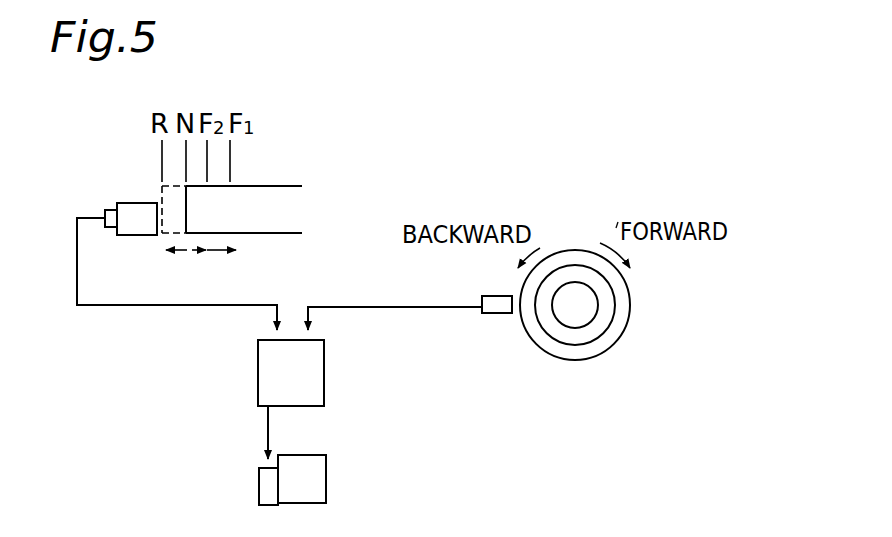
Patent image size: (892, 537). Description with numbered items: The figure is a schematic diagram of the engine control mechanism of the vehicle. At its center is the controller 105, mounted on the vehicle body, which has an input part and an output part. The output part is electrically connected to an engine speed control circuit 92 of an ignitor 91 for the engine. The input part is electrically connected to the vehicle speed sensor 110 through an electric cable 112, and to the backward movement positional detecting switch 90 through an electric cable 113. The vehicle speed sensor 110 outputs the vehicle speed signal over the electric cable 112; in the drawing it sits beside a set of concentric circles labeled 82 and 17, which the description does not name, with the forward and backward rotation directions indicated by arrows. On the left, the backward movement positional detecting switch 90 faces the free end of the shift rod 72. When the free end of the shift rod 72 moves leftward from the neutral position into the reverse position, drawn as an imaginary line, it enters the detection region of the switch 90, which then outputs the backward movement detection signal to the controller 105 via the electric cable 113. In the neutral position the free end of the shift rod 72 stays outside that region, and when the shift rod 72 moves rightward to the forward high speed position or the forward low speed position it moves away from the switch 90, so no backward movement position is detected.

The shift rod 72 is at (290, 186).
The backward movement positional detecting switch 90 is at (130, 203).
The electric cable 113 is at (130, 305).
The electric cable 112 is at (383, 307).
The controller 105 is at (258, 380).
The engine speed control circuit 92 is at (259, 483).
The ignitor 91 is at (326, 483).
The vehicle speed sensor 110 is at (492, 296).
The shaft 82 is at (620, 320).
The drive shaft 17 is at (572, 308).